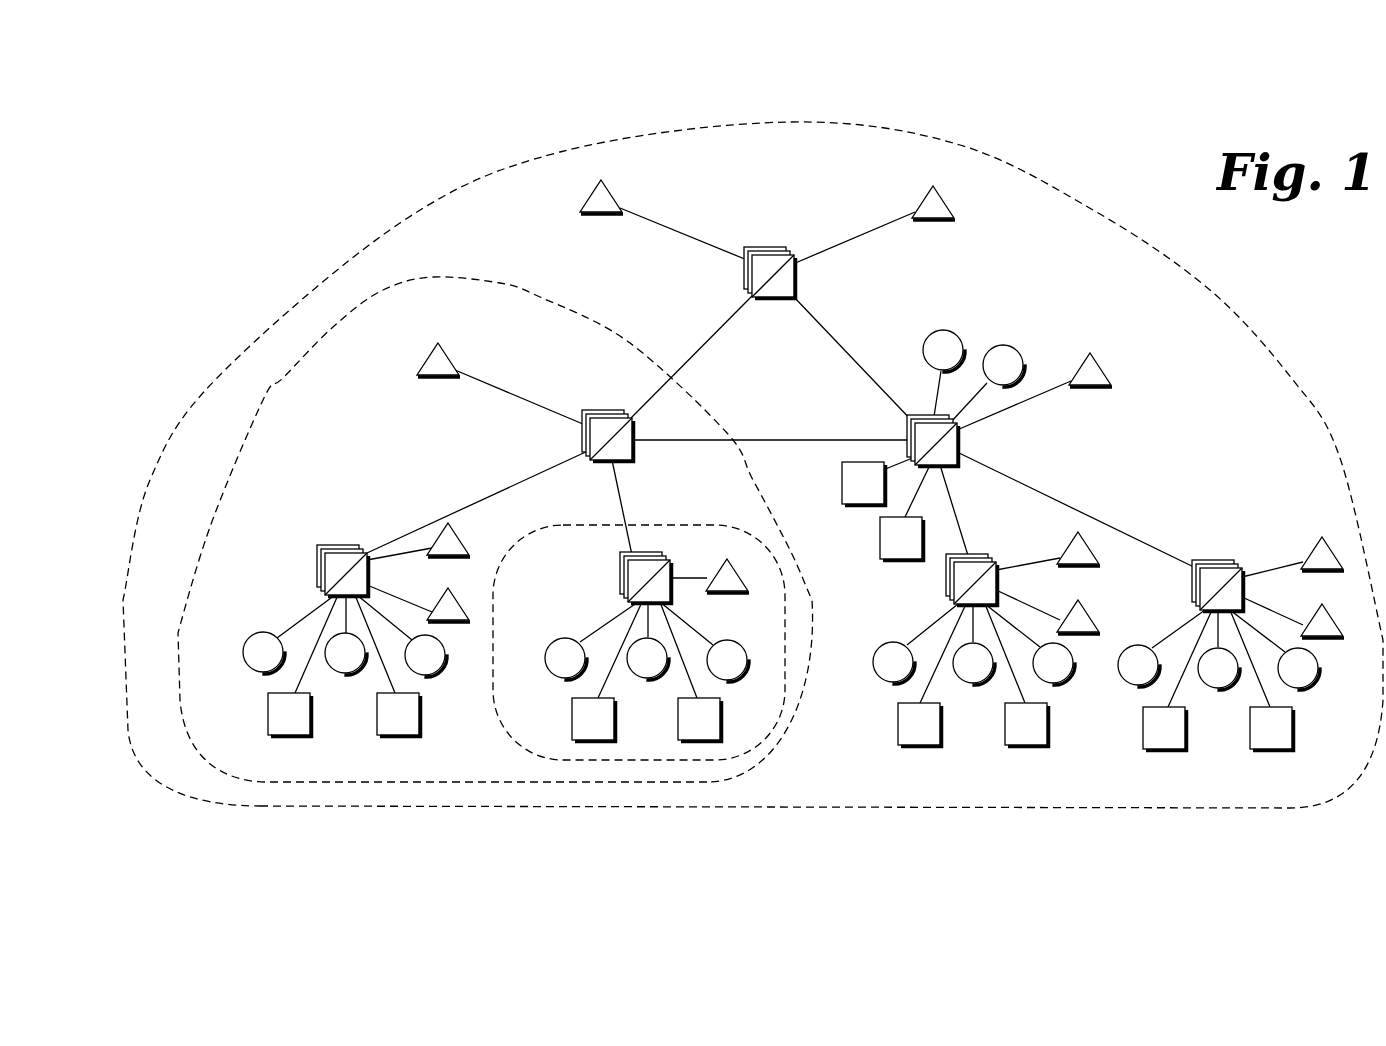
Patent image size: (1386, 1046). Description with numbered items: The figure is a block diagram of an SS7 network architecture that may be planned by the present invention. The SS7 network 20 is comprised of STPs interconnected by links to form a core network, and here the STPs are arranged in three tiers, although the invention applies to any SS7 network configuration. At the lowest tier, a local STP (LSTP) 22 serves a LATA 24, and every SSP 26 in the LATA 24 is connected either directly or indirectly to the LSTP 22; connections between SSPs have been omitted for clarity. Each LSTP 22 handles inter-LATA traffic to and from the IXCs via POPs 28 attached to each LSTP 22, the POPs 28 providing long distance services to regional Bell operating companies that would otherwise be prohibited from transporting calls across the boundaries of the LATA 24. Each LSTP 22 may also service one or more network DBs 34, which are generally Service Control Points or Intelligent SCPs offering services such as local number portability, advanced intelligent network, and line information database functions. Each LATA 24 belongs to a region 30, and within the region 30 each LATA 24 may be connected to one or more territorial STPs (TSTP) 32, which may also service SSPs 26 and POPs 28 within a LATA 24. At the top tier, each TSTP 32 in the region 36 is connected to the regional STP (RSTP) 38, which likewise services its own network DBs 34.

The SS7 network 20 is at (358, 196).
The local STP (LSTP) 22 is at (628, 552).
The LATA 24 is at (660, 525).
The SSP 26 is at (748, 665).
The POP 28 is at (721, 718).
The region 30 is at (227, 470).
The territorial STP (TSTP) 32 is at (607, 417).
The network DB 34 is at (602, 214).
The region 36 is at (707, 125).
The regional STP (RSTP) 38 is at (773, 298).